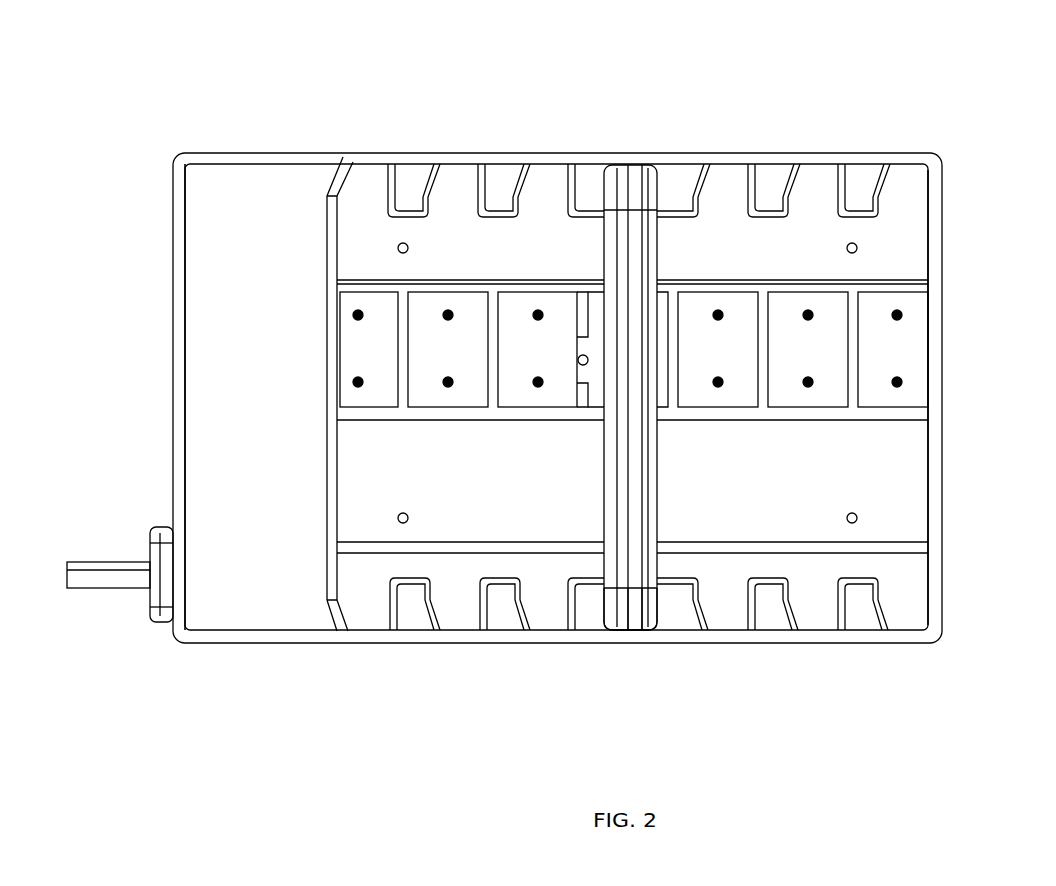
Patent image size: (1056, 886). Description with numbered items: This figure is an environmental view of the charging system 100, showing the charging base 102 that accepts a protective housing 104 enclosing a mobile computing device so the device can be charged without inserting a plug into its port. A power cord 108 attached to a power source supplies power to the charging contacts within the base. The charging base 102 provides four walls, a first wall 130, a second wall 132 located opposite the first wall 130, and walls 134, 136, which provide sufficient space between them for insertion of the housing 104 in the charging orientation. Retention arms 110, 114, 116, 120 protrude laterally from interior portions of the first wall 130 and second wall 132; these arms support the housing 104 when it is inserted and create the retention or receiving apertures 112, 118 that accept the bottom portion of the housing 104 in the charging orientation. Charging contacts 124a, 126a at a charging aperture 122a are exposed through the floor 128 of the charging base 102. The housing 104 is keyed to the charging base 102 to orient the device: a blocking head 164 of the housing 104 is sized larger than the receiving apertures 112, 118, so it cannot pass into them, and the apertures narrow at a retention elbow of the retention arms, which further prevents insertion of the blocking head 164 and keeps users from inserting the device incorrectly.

The charging system 100 is at (270, 580).
The charging base 102 is at (262, 196).
The housing 104 is at (616, 230).
The power cord 108 is at (132, 582).
The retention arm 110 is at (585, 615).
The retention aperture 112 is at (630, 640).
The retention arm 114 is at (683, 622).
The retention arm 116 is at (592, 188).
The receiving aperture 118 is at (630, 165).
The retention arm 120 is at (680, 178).
The charging aperture 122a is at (718, 356).
The charging contact 124a is at (723, 313).
The charging contact 126a is at (725, 385).
The floor 128 is at (367, 248).
The first wall 130 is at (822, 637).
The second wall 132 is at (781, 155).
The wall 134 is at (932, 593).
The wall 136 is at (238, 350).
The blocking head 164 is at (611, 618).